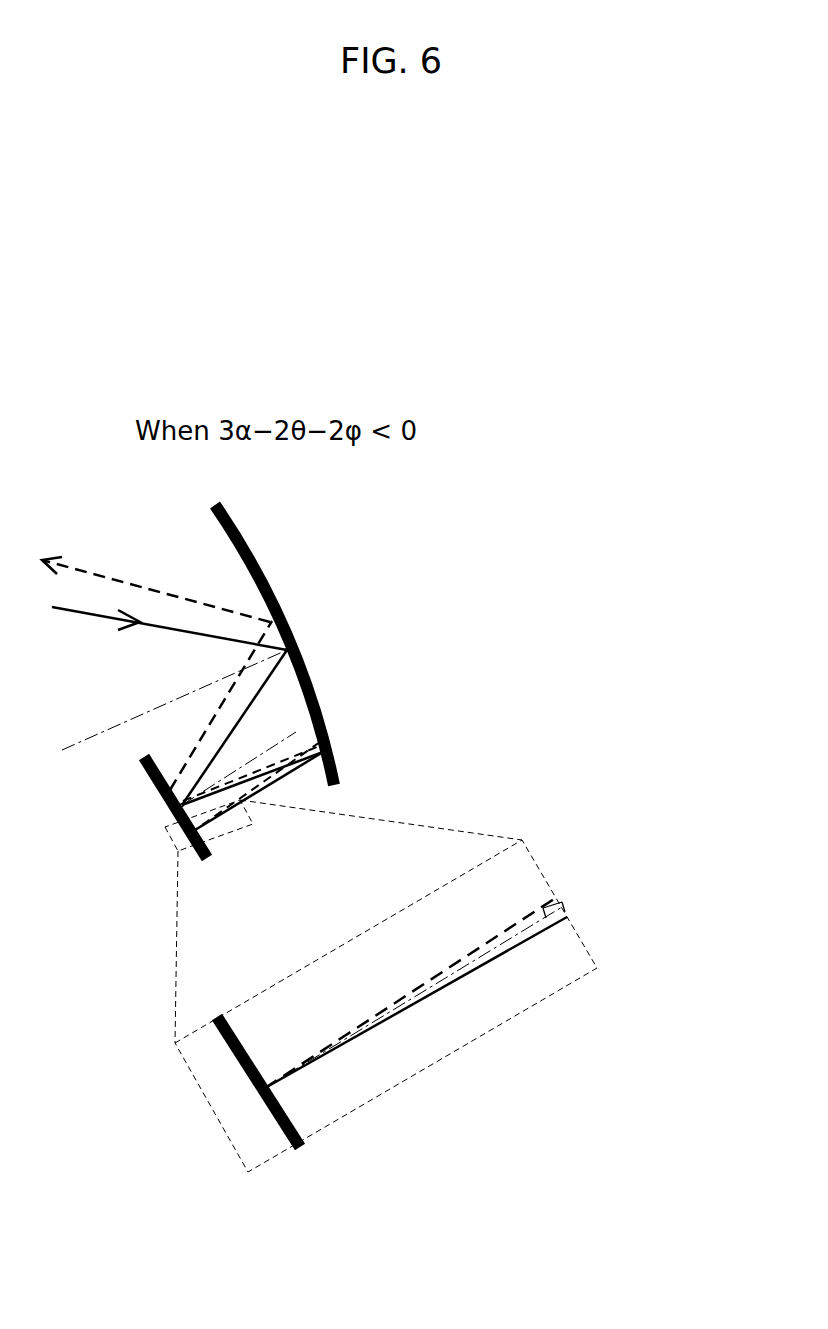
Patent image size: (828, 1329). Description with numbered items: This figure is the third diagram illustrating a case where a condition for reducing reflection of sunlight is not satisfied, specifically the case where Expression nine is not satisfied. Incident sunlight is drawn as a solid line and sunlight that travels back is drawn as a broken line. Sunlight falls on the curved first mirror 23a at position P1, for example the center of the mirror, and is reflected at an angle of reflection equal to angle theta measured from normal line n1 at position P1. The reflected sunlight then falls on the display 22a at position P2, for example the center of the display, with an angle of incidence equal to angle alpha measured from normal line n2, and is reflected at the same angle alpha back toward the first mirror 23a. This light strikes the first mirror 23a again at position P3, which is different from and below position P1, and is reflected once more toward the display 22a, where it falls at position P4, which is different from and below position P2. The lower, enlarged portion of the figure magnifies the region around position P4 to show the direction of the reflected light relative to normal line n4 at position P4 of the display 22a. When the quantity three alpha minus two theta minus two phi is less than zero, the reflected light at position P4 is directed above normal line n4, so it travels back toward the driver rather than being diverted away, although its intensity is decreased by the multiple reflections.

The first mirror 23a is at (263, 578).
The display 22a is at (145, 777).
The position P1 is at (303, 643).
The position P2 is at (167, 815).
The position P3 is at (338, 748).
The position P4 is at (253, 1093).
The normal line n1 is at (130, 716).
The normal line n2 is at (275, 737).
The normal line n4 is at (510, 943).